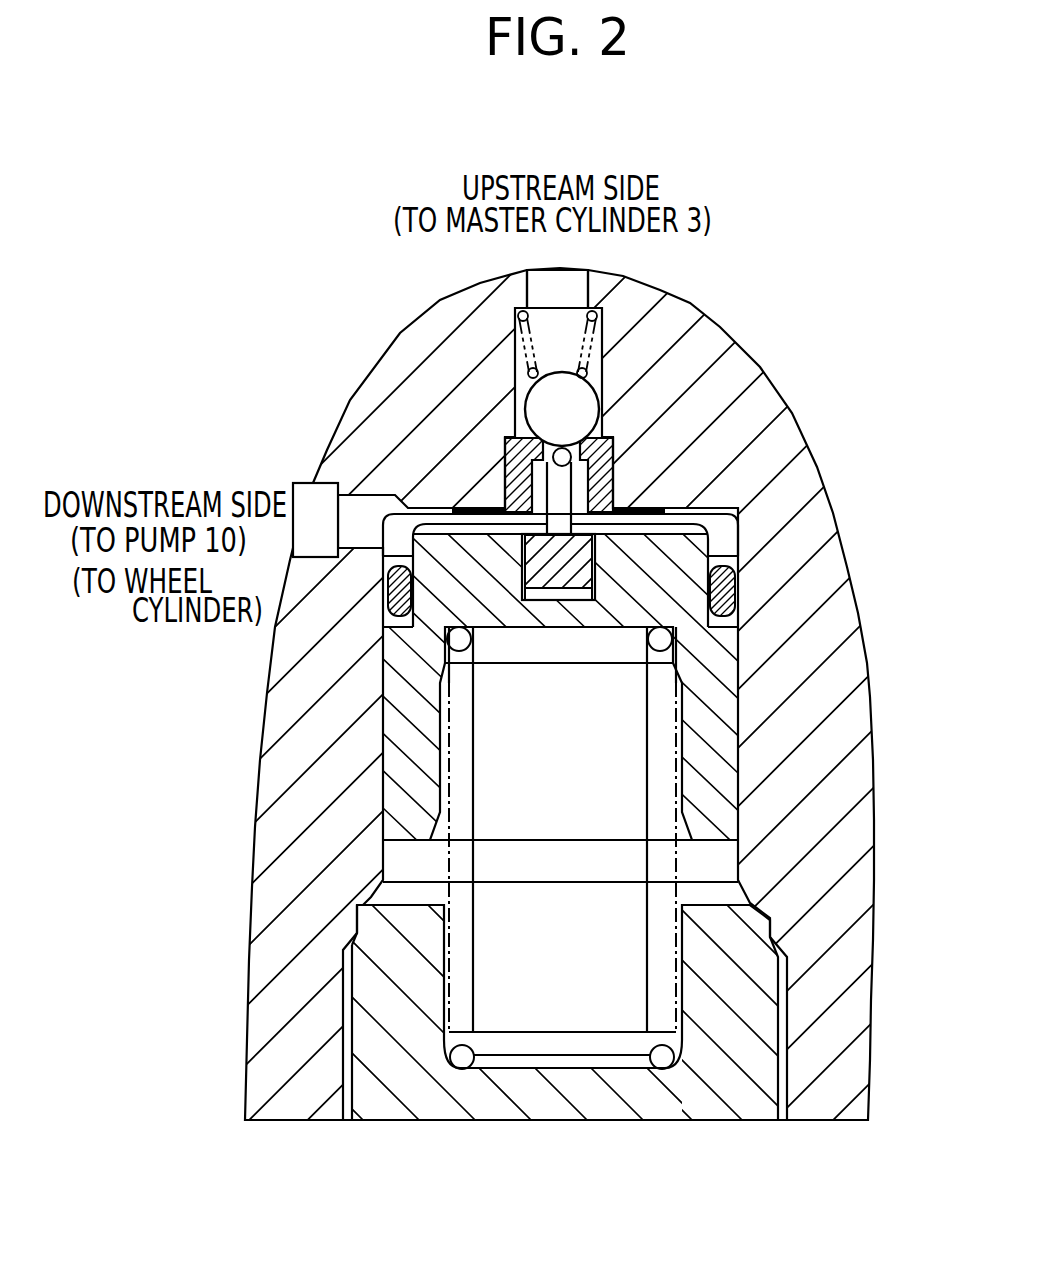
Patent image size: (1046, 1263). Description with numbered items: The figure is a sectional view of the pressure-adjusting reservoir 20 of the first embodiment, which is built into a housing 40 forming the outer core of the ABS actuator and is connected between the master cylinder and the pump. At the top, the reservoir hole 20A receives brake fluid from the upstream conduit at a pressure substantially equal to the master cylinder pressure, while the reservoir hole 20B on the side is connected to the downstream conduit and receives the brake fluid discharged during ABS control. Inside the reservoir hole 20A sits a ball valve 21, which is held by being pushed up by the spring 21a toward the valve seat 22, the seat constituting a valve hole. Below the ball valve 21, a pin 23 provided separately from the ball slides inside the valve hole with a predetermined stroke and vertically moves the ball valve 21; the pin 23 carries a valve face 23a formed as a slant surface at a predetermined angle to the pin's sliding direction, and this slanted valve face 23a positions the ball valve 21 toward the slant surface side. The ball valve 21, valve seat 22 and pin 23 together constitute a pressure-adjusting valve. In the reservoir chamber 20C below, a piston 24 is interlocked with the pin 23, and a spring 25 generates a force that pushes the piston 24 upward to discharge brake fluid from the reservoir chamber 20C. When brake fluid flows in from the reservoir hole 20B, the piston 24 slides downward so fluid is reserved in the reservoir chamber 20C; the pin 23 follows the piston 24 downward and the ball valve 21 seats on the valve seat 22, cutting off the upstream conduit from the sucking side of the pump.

The pressure-adjusting reservoir 20 is at (383, 751).
The reservoir hole 20A is at (558, 284).
The reservoir hole 20B is at (323, 502).
The reservoir chamber 20C is at (723, 526).
The ball valve 21 is at (586, 398).
The spring 21a is at (598, 318).
The valve seat 22 is at (505, 452).
The pin 23 is at (562, 493).
The valve face 23a is at (580, 447).
The piston 24 is at (405, 696).
The spring 25 is at (447, 862).
The housing 40 is at (283, 1013).